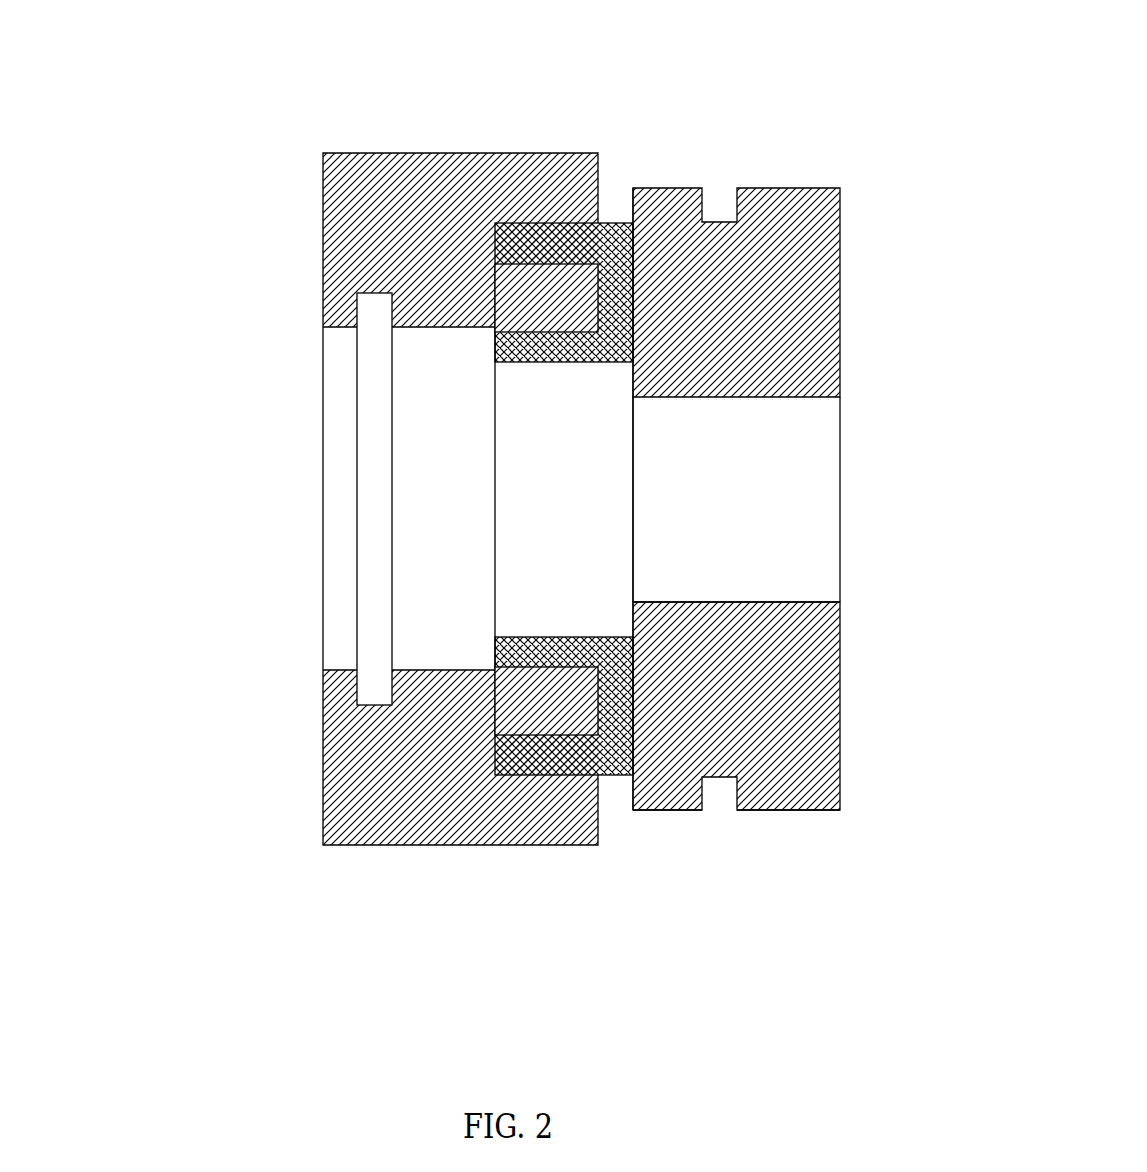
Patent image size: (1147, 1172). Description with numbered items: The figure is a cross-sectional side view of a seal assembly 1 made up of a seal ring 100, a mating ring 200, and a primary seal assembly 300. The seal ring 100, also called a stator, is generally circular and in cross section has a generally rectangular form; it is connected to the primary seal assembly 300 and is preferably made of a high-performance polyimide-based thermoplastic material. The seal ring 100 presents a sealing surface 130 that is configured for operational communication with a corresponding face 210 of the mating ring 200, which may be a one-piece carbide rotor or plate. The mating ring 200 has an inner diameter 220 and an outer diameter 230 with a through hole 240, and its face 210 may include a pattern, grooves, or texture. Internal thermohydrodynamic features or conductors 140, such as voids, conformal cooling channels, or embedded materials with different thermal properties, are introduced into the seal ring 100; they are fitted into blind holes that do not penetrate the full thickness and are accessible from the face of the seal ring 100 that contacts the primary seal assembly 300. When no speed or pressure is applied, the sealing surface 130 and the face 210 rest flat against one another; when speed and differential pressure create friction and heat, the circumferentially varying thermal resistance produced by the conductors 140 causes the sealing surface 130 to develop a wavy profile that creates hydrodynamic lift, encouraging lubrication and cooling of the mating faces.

The seal assembly 1 is at (196, 902).
The seal ring 100 is at (550, 222).
The sealing surface 130 is at (632, 222).
The thermohydrodynamic conductors 140 is at (495, 287).
The mating ring 200 is at (790, 188).
The face 210 is at (635, 758).
The inner diameter 220 is at (823, 600).
The outer diameter 230 is at (800, 805).
The through hole 240 is at (823, 466).
The primary seal assembly 300 is at (323, 222).